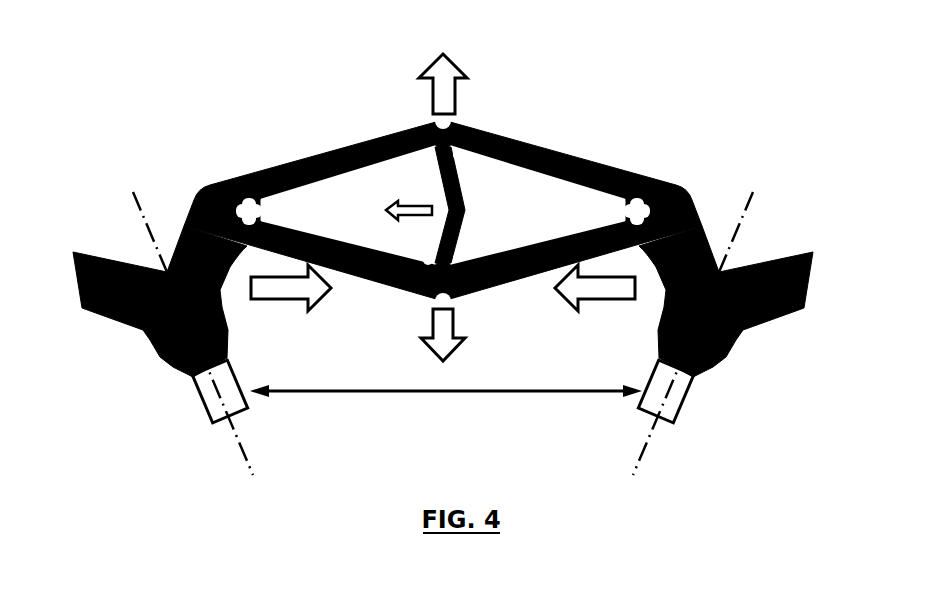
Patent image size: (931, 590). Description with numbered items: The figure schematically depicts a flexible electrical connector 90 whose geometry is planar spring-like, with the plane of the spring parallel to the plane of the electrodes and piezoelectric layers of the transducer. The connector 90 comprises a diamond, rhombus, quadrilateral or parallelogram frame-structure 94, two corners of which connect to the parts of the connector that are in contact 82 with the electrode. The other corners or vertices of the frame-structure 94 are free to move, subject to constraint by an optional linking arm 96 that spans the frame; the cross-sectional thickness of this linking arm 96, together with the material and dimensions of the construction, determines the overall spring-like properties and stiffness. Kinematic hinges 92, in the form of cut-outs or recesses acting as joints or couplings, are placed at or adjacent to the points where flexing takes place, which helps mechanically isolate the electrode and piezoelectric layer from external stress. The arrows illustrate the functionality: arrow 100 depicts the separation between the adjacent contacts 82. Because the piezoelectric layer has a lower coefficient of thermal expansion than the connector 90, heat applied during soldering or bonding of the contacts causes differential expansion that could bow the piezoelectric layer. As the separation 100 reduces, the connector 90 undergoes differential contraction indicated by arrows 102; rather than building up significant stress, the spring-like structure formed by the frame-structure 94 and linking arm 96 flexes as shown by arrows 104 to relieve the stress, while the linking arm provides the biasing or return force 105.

The contact 82 is at (208, 420).
The flexible electrical connector 90 is at (788, 251).
The kinematic hinge 92 is at (252, 200).
The frame-structure 94 is at (543, 146).
The linking arm 96 is at (428, 182).
The separation 100 is at (489, 396).
The contraction 102 is at (292, 309).
The flexing 104 is at (460, 55).
The return force 105 is at (374, 210).